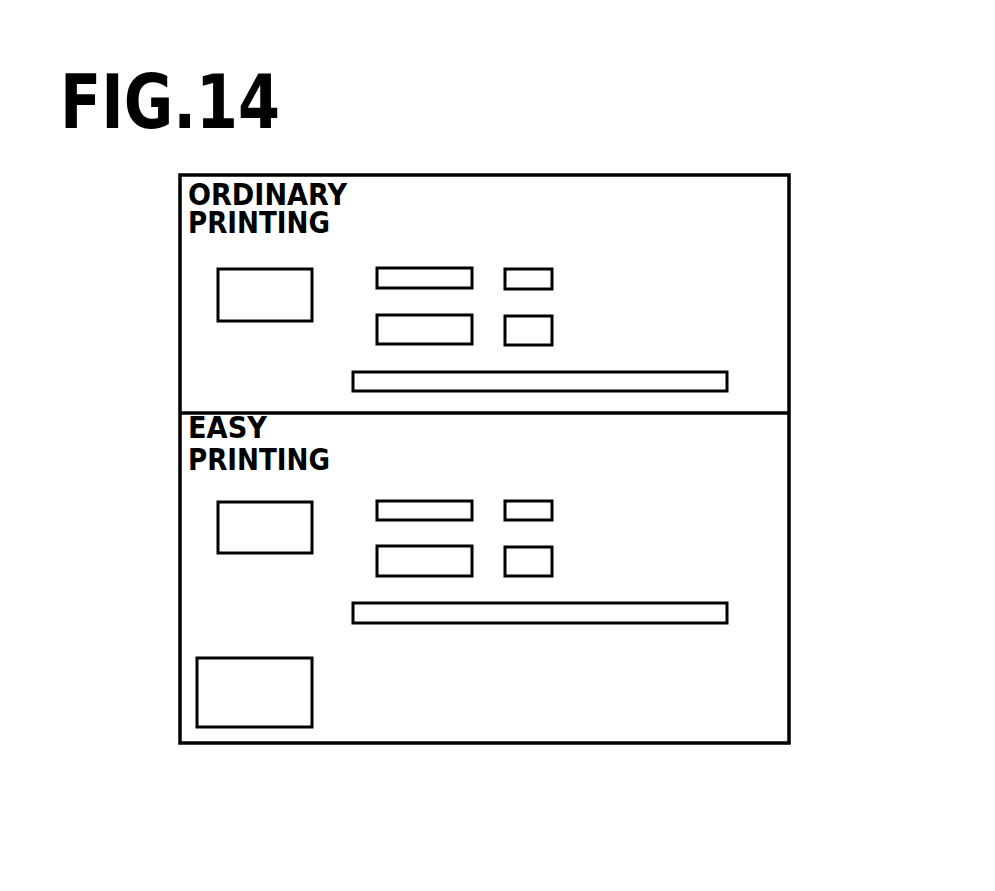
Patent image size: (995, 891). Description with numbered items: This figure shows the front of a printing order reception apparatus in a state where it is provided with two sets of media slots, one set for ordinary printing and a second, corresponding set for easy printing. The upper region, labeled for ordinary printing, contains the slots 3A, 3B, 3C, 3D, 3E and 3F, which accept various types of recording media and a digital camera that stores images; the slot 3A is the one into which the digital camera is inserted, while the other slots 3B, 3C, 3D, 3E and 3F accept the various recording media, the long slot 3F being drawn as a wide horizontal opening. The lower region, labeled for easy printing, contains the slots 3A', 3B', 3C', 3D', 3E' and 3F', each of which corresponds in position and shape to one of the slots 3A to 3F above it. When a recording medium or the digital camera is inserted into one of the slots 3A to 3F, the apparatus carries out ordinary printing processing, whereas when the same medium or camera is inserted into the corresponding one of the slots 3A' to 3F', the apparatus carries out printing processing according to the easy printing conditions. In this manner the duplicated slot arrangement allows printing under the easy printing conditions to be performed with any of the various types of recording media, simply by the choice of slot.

The slot 3A is at (206, 295).
The slot 3B is at (436, 207).
The slot 3C is at (532, 207).
The slot 3D is at (363, 347).
The slot 3E is at (592, 330).
The slot 3F is at (606, 394).
The slot 3A' is at (206, 527).
The slot 3B' is at (468, 478).
The slot 3C' is at (596, 512).
The slot 3D' is at (363, 579).
The slot 3E' is at (596, 562).
The slot 3F' is at (611, 626).